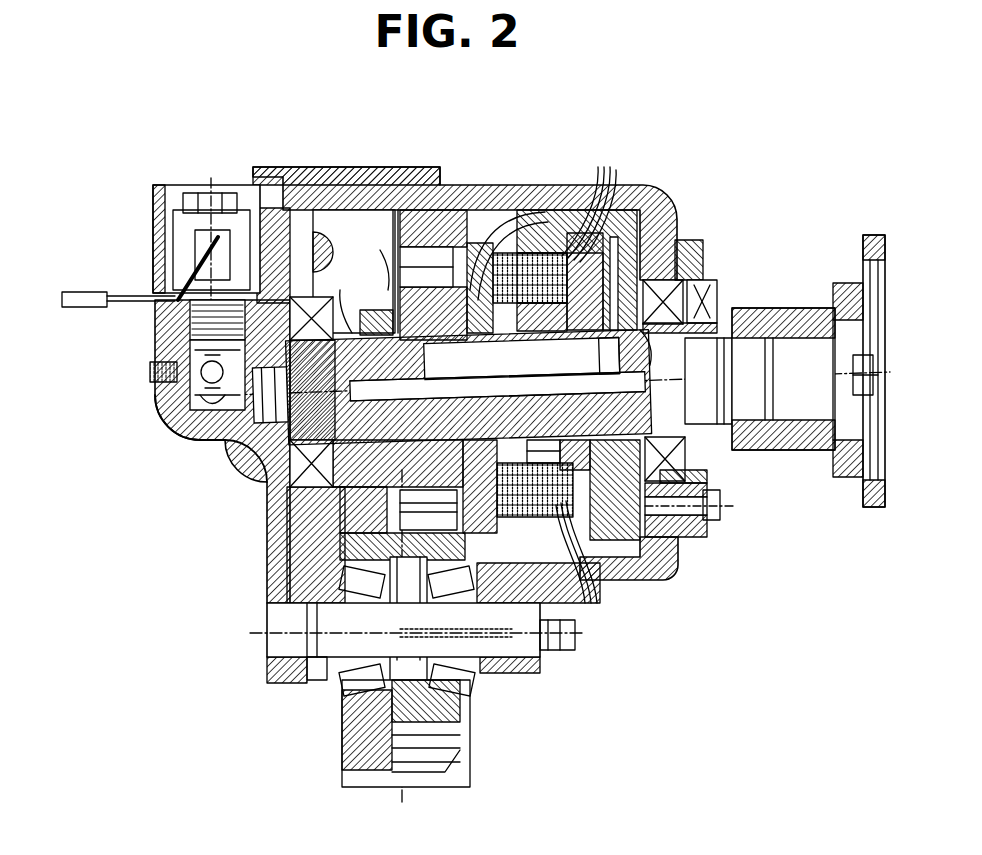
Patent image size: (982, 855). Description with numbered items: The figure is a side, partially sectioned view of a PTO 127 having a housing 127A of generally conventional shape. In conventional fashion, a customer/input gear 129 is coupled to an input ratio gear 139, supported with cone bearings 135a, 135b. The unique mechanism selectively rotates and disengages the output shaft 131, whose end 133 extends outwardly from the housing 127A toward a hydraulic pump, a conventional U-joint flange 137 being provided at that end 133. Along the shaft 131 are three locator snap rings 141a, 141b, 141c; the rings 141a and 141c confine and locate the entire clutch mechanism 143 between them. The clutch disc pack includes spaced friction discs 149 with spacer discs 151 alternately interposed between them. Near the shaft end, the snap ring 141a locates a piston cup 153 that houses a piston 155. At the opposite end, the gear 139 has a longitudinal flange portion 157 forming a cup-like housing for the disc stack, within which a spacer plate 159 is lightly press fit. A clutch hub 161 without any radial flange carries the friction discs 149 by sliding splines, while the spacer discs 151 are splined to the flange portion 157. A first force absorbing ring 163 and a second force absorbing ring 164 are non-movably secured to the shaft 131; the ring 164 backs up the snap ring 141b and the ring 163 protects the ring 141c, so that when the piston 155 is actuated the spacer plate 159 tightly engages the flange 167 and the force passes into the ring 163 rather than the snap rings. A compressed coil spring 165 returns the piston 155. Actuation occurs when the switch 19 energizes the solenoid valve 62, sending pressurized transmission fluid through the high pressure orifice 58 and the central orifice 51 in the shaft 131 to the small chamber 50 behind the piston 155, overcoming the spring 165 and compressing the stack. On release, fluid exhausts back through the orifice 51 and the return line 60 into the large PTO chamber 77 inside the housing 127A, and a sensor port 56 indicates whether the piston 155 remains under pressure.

The switch 19 is at (88, 305).
The chamber 50 is at (670, 232).
The central orifice 51 is at (345, 447).
The sensor port 56 is at (160, 380).
The high pressure orifice 58 is at (235, 357).
The return line 60 is at (217, 440).
The solenoid valve 62 is at (212, 245).
The PTO chamber 77 is at (344, 257).
The PTO 127 is at (738, 183).
The housing 127A is at (455, 185).
The customer/input gear 129 is at (420, 777).
The output shaft 131 is at (705, 455).
The end 133 is at (783, 404).
The cone bearing 135a is at (340, 680).
The cone bearing 135b is at (460, 680).
The U-joint flange 137 is at (792, 448).
The input ratio gear 139 is at (385, 255).
The locator snap ring 141a is at (643, 333).
The locator snap ring 141b is at (493, 340).
The locator snap ring 141c is at (356, 297).
The clutch mechanism 143 is at (513, 212).
The friction discs 149 is at (562, 330).
The spacer discs 151 is at (588, 561).
The piston cup 153 is at (703, 260).
The piston 155 is at (640, 222).
The longitudinal flange portion 157 is at (556, 205).
The spacer plate 159 is at (452, 265).
The clutch hub 161 is at (532, 446).
The first force absorbing ring 163 is at (372, 310).
The second force absorbing ring 164 is at (468, 338).
The coil spring 165 is at (591, 356).
The flange 167 is at (503, 225).